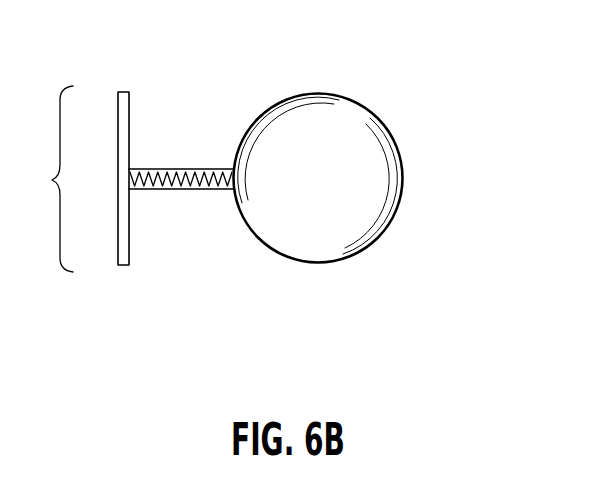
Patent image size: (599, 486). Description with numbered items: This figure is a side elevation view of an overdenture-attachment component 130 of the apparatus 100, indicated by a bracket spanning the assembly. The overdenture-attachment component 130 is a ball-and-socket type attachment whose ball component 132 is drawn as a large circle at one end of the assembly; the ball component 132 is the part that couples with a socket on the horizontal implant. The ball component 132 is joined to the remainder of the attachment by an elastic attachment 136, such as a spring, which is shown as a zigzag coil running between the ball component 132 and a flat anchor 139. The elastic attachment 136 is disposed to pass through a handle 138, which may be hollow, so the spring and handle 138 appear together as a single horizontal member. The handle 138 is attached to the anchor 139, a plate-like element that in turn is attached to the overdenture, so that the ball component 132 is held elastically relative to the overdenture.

The apparatus 100 is at (117, 330).
The overdenture-attachment component 130 is at (134, 167).
The ball component 132 is at (403, 164).
The elastic attachment 136 is at (193, 169).
The handle 138 is at (174, 189).
The anchor 139 is at (124, 91).